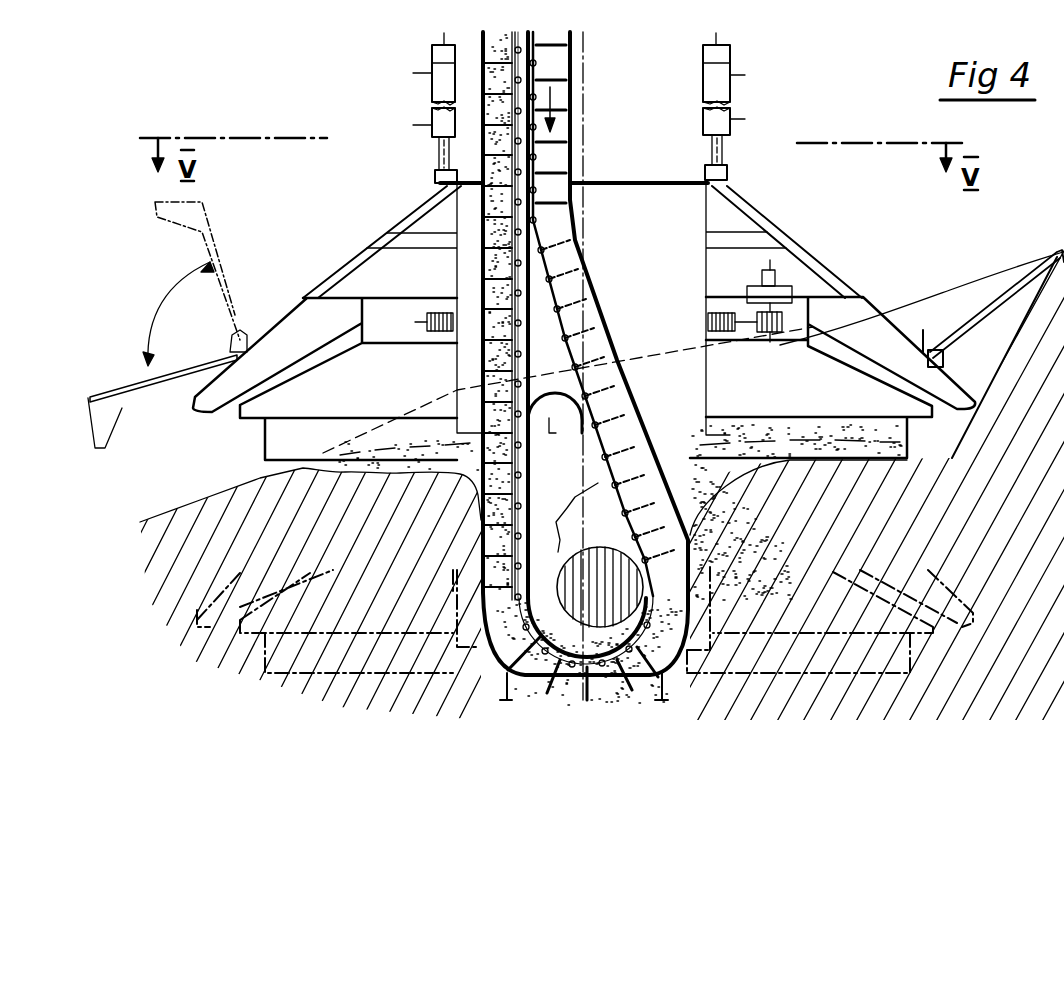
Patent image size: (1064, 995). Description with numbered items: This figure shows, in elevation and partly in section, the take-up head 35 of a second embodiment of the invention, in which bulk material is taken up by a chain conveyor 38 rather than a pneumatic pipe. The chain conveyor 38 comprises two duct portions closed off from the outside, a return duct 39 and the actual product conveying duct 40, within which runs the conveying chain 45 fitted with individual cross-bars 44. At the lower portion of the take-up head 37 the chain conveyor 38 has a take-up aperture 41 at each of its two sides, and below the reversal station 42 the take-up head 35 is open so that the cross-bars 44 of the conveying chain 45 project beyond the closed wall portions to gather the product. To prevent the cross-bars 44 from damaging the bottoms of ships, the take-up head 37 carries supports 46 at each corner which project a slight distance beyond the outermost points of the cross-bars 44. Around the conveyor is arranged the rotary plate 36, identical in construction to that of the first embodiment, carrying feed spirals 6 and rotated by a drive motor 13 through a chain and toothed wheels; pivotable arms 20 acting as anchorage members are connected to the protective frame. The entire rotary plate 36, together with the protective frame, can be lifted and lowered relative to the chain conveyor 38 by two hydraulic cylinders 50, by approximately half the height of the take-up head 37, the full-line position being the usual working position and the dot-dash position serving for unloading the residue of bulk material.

The feed spirals 6 is at (893, 443).
The drive motor 13 is at (763, 293).
The pivotable arms 20 is at (992, 305).
The take-up head 35 is at (660, 248).
The rotary plate 36 is at (827, 390).
The take-up head 37 is at (547, 363).
The chain conveyor 38 is at (570, 50).
The return duct 39 is at (562, 97).
The product conveying duct 40 is at (493, 173).
The take-up aperture 41 is at (603, 607).
The reversal station 42 is at (543, 633).
The cross-bars 44 is at (587, 693).
The conveying chain 45 is at (603, 330).
The supports 46 is at (503, 693).
The hydraulic cylinders 50 is at (430, 93).